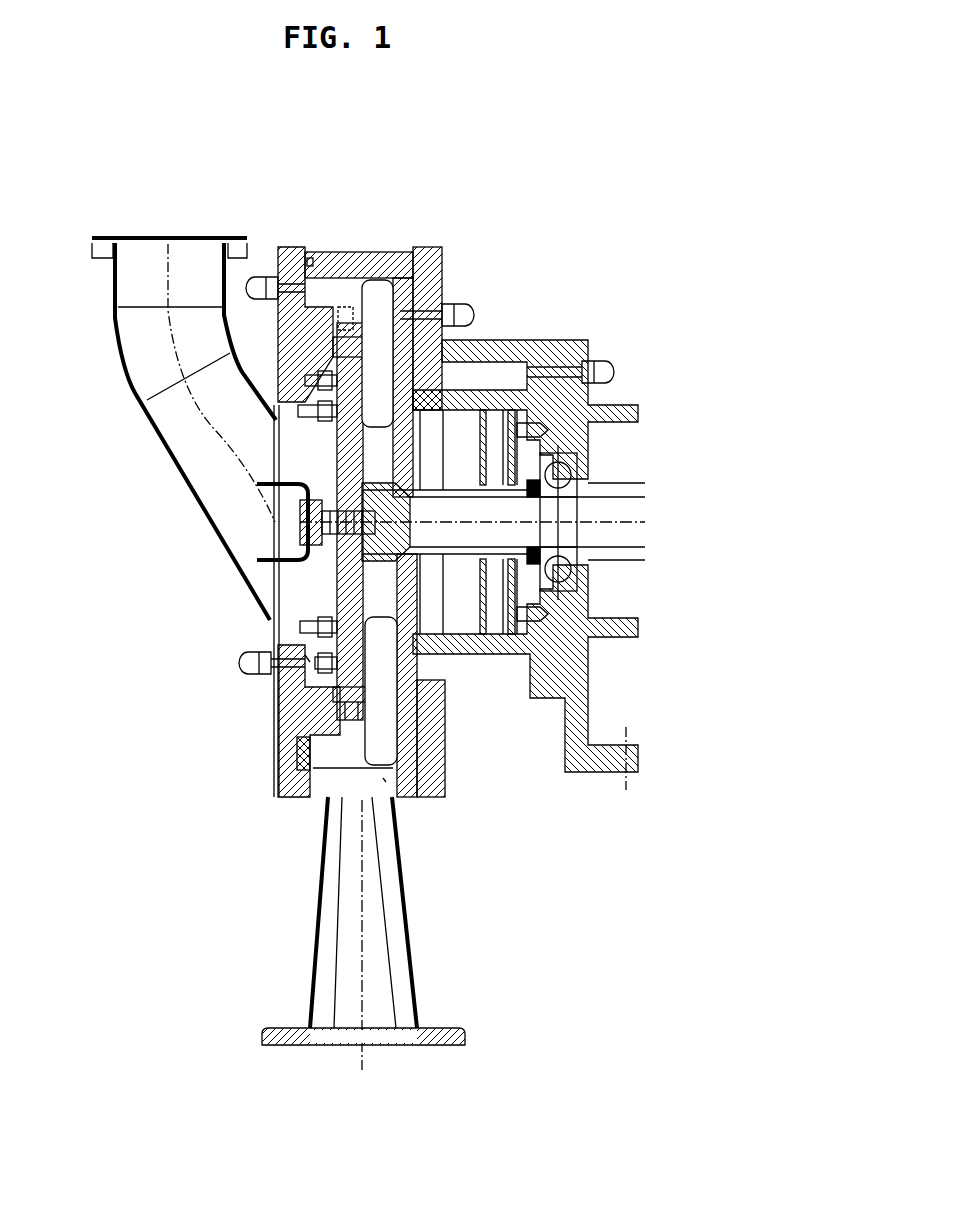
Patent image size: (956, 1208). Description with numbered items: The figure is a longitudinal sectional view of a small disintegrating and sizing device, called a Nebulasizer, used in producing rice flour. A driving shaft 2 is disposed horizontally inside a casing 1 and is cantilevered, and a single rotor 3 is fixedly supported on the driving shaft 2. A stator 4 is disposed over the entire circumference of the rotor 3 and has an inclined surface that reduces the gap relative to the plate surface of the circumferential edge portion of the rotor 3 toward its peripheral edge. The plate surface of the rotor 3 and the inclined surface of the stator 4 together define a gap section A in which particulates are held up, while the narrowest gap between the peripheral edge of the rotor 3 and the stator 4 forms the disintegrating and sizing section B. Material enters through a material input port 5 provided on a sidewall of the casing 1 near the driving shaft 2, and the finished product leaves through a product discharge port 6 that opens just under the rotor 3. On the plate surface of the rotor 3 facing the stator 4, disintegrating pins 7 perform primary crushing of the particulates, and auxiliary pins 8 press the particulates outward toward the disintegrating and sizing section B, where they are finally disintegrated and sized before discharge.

The casing 1 is at (350, 250).
The driving shaft 2 is at (482, 520).
The rotor 3 is at (447, 707).
The stator 4 is at (277, 286).
The material input port 5 is at (312, 478).
The product discharge port 6 is at (358, 786).
The disintegrating pins 7 is at (300, 411).
The auxiliary pins 8 is at (360, 330).
The gap section A is at (310, 662).
The disintegrating and sizing section B is at (383, 780).